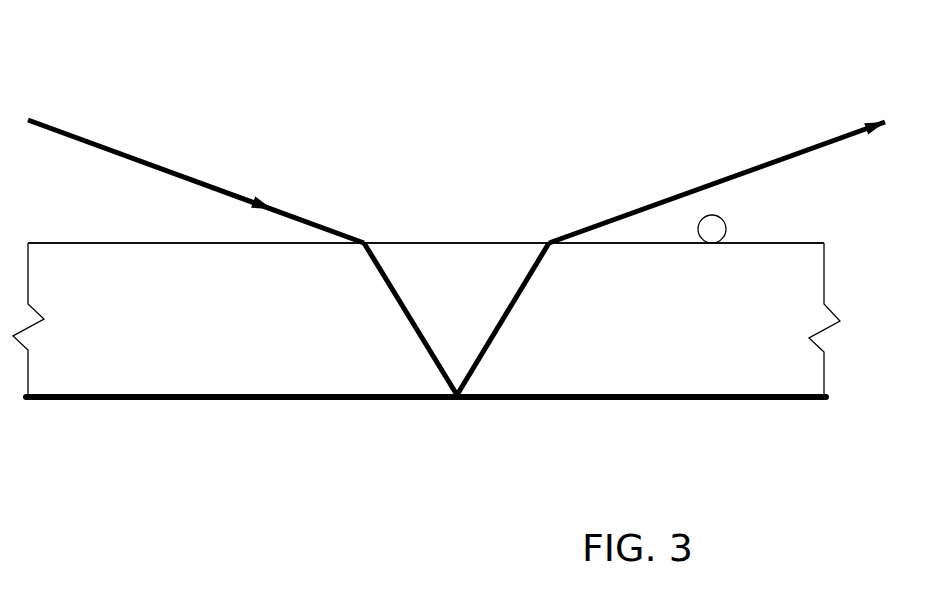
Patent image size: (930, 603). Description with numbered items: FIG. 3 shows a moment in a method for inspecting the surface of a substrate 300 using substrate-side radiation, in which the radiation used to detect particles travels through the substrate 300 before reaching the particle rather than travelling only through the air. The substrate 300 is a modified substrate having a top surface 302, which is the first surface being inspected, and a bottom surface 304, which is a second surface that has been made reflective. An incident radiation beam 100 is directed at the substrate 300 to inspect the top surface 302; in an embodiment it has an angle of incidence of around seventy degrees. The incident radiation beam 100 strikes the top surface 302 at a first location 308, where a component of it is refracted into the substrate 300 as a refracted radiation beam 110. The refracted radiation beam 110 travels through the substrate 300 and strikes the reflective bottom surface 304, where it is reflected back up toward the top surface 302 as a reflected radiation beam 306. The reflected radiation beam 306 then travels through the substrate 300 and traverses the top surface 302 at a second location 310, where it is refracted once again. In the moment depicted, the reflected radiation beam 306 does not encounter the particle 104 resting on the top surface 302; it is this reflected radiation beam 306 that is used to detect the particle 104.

The incident radiation beam 100 is at (104, 145).
The particle 104 is at (727, 226).
The refracted radiation beam 110 is at (408, 322).
The substrate 300 is at (719, 323).
The top surface 302 is at (70, 243).
The bottom surface 304 is at (622, 401).
The reflected radiation beam 306 is at (505, 318).
The first location 308 is at (370, 236).
The second location 310 is at (547, 236).